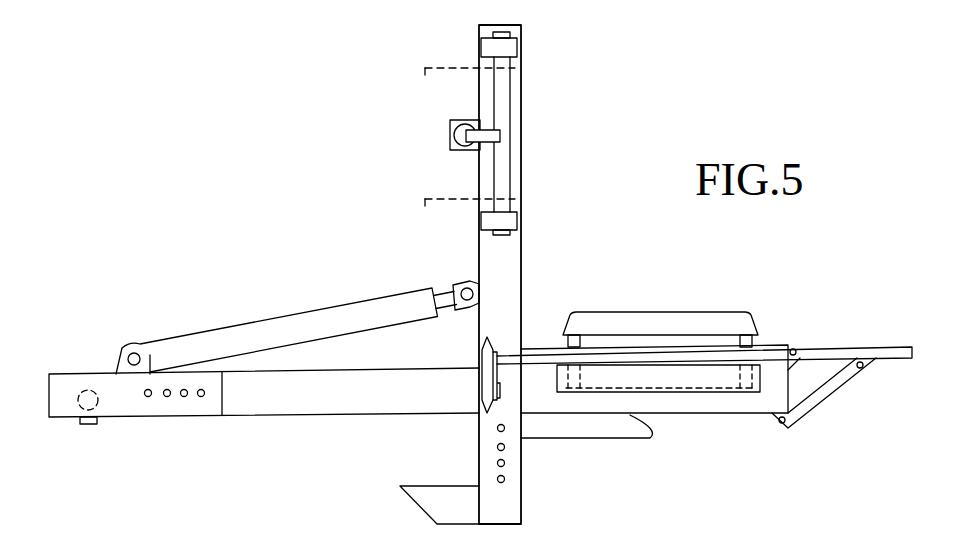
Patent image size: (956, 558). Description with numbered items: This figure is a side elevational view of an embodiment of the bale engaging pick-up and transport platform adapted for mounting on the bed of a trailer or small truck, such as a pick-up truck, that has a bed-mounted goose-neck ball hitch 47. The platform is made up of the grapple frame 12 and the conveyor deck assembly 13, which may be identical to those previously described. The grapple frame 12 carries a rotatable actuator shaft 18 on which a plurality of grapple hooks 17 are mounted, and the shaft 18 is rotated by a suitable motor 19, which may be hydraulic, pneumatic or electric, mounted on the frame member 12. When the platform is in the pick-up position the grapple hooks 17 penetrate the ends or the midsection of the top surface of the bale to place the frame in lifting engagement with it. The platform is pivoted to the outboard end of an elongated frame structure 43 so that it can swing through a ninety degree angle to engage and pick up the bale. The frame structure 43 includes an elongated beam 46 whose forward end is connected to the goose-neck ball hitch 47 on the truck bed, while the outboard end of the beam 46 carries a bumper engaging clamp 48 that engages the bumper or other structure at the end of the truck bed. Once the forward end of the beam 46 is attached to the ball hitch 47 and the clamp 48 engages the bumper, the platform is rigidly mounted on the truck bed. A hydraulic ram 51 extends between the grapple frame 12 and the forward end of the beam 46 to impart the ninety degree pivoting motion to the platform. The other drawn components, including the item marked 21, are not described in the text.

The grapple frame 12 is at (508, 284).
The conveyor deck assembly 13 is at (747, 405).
The grapple hooks 17 is at (446, 62).
The actuator shaft 18 is at (504, 166).
The motor 19 is at (451, 130).
The platform 21 is at (678, 302).
The elongated frame structure 43 is at (391, 425).
The elongated beam 46 is at (288, 403).
The goose-neck ball hitch 47 is at (93, 388).
The bumper engaging clamp 48 is at (540, 491).
The hydraulic ram 51 is at (316, 318).